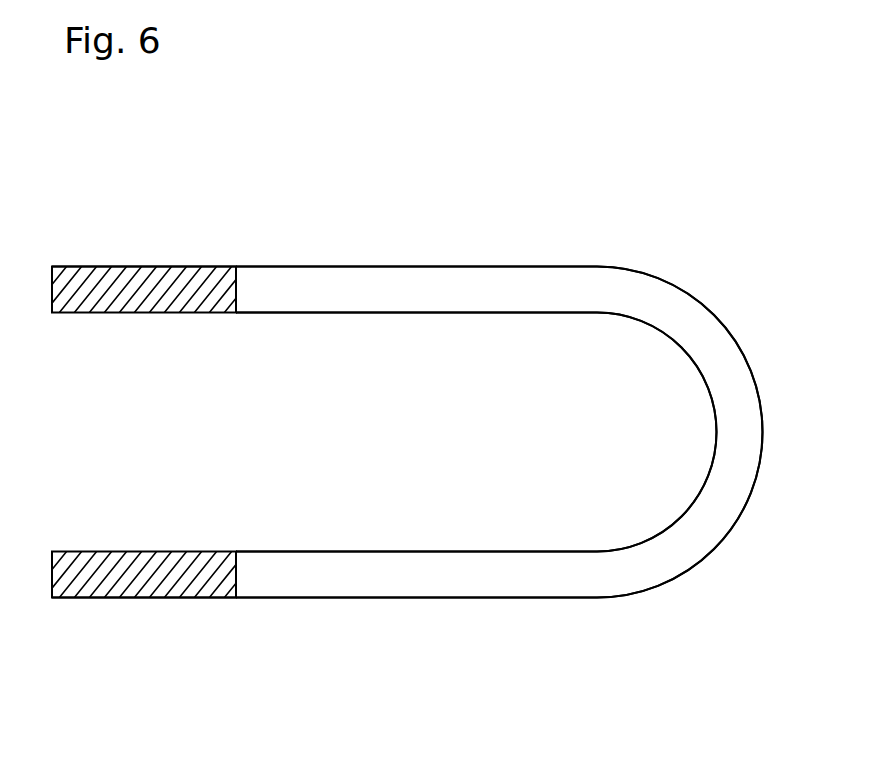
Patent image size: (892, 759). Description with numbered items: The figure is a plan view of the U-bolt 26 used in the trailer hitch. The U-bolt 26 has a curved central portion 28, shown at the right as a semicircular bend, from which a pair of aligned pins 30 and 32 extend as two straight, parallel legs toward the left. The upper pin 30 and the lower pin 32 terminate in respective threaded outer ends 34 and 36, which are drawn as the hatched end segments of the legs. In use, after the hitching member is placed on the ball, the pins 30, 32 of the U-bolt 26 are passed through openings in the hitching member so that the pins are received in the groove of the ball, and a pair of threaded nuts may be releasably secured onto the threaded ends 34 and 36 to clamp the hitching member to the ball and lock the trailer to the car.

The U-bolt 26 is at (472, 266).
The curved central portion 28 is at (727, 443).
The pin 30 is at (357, 266).
The pin 32 is at (394, 598).
The threaded outer end 34 is at (122, 266).
The threaded outer end 36 is at (108, 598).